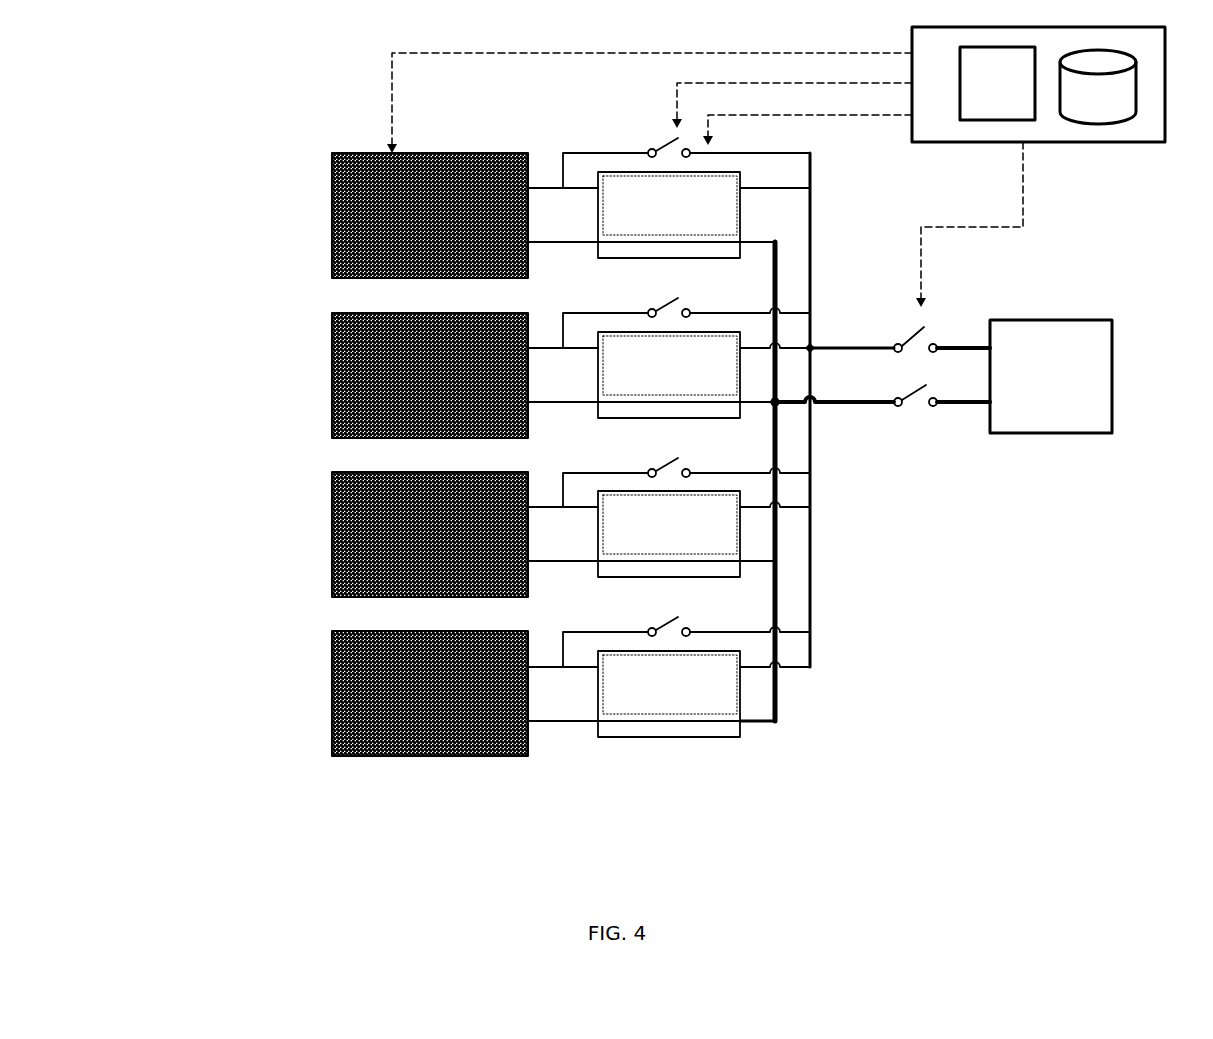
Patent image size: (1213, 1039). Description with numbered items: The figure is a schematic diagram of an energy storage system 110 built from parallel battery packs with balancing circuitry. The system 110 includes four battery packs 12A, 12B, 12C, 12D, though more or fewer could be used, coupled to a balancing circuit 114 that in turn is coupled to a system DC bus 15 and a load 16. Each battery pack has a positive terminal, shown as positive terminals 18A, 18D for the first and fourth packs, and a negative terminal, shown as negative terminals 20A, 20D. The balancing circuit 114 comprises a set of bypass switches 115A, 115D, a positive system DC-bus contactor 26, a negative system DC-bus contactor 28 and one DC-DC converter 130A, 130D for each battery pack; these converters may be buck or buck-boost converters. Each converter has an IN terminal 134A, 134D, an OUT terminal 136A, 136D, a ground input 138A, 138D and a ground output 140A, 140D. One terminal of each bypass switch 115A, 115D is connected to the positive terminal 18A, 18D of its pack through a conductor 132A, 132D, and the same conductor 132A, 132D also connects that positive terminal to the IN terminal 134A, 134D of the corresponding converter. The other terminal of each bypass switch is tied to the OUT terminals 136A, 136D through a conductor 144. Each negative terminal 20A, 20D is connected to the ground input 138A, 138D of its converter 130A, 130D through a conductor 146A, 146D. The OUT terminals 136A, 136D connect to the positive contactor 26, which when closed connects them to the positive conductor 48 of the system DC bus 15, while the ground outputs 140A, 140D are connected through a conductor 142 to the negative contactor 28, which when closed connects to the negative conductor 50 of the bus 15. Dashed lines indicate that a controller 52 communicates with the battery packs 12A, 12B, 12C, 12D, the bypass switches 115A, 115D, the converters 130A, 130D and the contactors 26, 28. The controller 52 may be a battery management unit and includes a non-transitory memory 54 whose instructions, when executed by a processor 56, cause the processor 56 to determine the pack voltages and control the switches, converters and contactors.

The energy storage system 110 is at (150, 146).
The battery pack 12A is at (330, 236).
The battery pack 12B is at (330, 394).
The battery pack 12C is at (330, 553).
The battery pack 12D is at (330, 711).
The positive terminal 18A is at (530, 186).
The positive terminal 18D is at (538, 665).
The negative terminal 20A is at (529, 243).
The negative terminal 20D is at (530, 724).
The conductor 132A is at (548, 186).
The conductor 132D is at (573, 668).
The IN terminal 134A is at (592, 183).
The IN terminal 134D is at (570, 630).
The OUT terminal 136A is at (744, 188).
The OUT terminal 136D is at (743, 666).
The ground input 138A is at (598, 243).
The ground input 138D is at (598, 722).
The ground output 140A is at (740, 245).
The ground output 140D is at (742, 722).
The conductor 146A is at (563, 244).
The conductor 146D is at (562, 724).
The bypass switch 115A is at (667, 140).
The bypass switch 115D is at (666, 631).
The DC-DC converter 130A is at (757, 213).
The DC-DC converter 130D is at (693, 755).
The conductor 142 is at (778, 697).
The conductor 144 is at (812, 218).
The balancing circuit 114 is at (943, 462).
The system DC bus 15 is at (914, 421).
The positive system DC-bus contactor 26 is at (912, 342).
The negative system DC-bus contactor 28 is at (912, 410).
The positive conductor 48 is at (950, 348).
The negative conductor 50 is at (973, 443).
The load 16 is at (1050, 442).
The controller 52 is at (1038, 125).
The non-transitory memory 54 is at (1098, 87).
The processor 56 is at (997, 83).